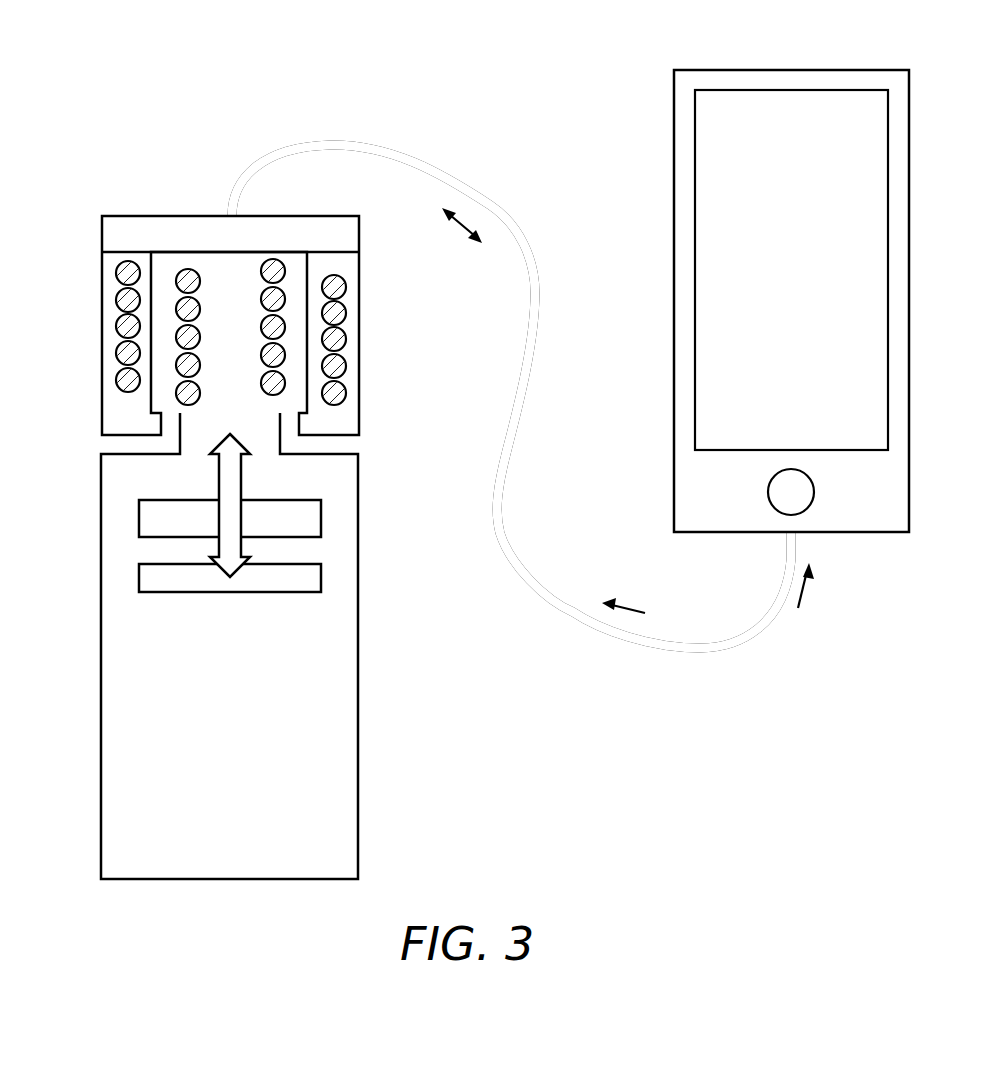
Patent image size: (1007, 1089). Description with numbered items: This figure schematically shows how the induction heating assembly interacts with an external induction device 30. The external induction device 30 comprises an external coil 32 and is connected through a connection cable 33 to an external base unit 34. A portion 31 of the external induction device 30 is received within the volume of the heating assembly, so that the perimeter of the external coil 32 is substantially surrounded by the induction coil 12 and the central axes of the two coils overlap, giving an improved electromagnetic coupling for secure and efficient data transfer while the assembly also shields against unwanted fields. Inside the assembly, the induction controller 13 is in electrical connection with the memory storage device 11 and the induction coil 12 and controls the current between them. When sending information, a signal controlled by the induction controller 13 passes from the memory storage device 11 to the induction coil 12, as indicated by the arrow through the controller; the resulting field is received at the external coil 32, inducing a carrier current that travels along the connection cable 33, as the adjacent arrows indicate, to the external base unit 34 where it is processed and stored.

The external induction device 30 is at (115, 106).
The portion of the external induction device 31 is at (102, 232).
The external coil 32 is at (188, 268).
The induction coil 12 is at (346, 312).
The induction controller 13 is at (321, 515).
The memory storage device 11 is at (321, 572).
The connection cable 33 is at (462, 192).
The external base unit 34 is at (880, 70).